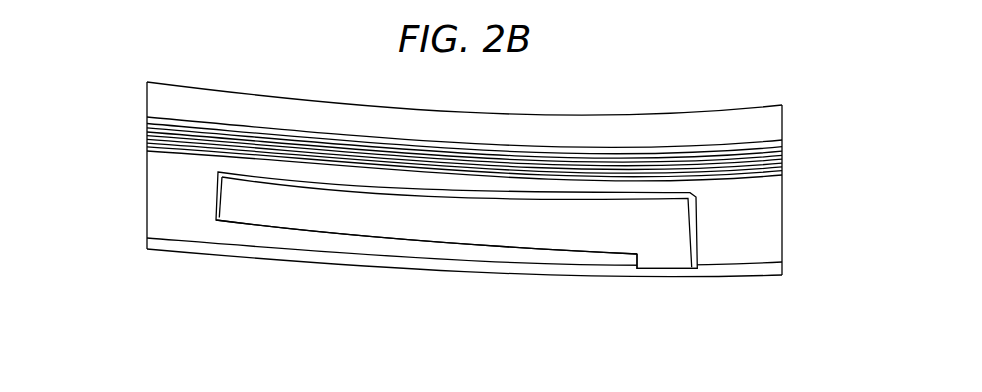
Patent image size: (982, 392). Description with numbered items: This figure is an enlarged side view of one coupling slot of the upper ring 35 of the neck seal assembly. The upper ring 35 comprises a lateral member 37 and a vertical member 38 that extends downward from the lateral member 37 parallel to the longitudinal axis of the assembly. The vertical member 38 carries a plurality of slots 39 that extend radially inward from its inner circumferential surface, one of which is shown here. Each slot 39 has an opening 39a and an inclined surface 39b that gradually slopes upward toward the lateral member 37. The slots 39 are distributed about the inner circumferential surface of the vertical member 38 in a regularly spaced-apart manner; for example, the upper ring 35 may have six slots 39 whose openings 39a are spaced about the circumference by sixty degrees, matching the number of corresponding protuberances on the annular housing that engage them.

The upper ring 35 is at (147, 139).
The lateral member 37 is at (200, 157).
The vertical member 38 is at (747, 220).
The slot 39 is at (456, 259).
The opening 39a is at (663, 268).
The inclined surface 39b is at (408, 240).